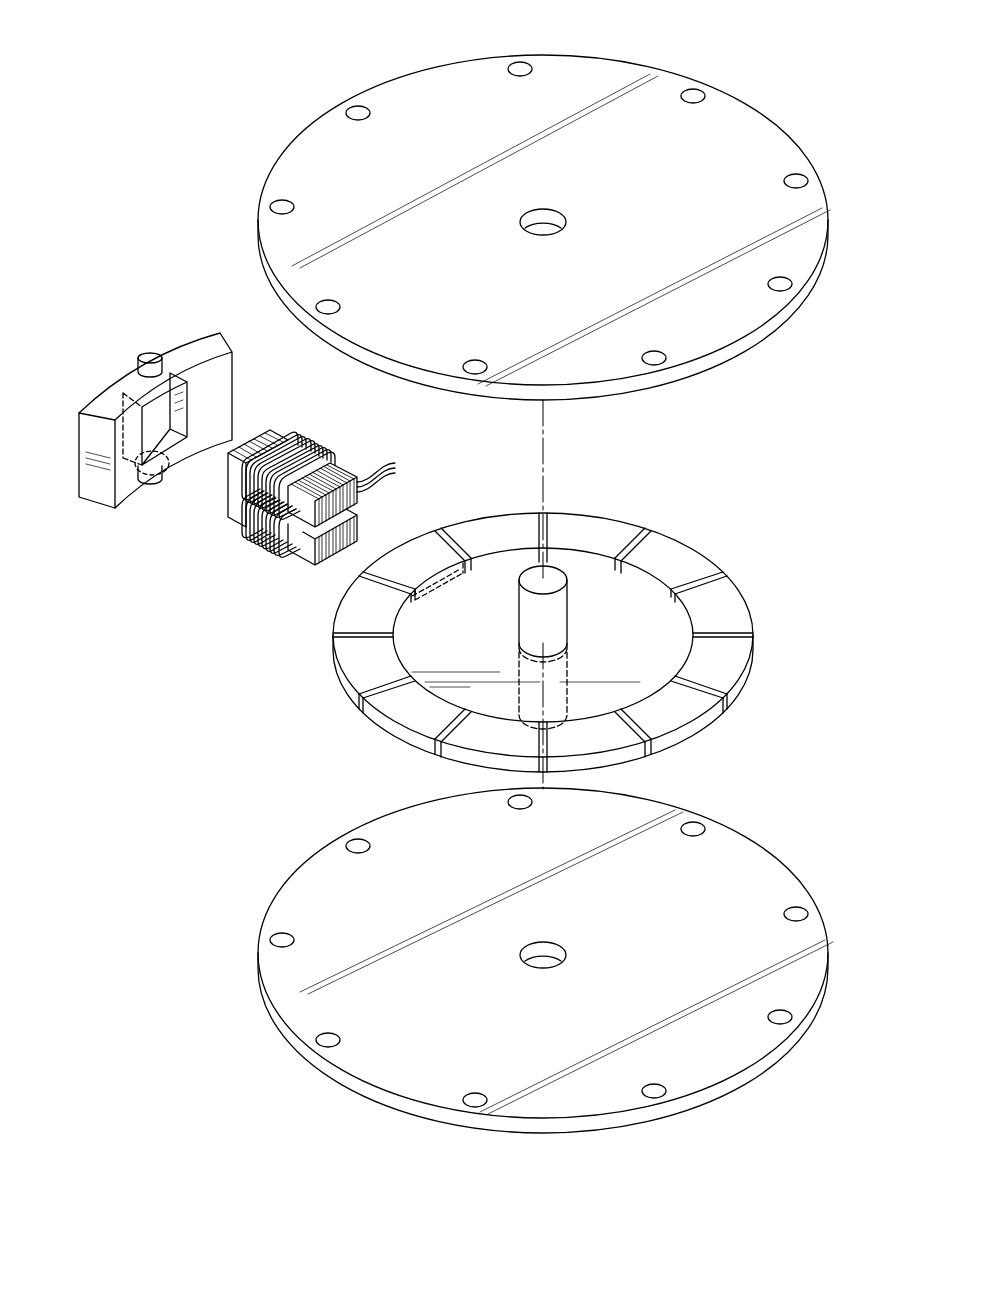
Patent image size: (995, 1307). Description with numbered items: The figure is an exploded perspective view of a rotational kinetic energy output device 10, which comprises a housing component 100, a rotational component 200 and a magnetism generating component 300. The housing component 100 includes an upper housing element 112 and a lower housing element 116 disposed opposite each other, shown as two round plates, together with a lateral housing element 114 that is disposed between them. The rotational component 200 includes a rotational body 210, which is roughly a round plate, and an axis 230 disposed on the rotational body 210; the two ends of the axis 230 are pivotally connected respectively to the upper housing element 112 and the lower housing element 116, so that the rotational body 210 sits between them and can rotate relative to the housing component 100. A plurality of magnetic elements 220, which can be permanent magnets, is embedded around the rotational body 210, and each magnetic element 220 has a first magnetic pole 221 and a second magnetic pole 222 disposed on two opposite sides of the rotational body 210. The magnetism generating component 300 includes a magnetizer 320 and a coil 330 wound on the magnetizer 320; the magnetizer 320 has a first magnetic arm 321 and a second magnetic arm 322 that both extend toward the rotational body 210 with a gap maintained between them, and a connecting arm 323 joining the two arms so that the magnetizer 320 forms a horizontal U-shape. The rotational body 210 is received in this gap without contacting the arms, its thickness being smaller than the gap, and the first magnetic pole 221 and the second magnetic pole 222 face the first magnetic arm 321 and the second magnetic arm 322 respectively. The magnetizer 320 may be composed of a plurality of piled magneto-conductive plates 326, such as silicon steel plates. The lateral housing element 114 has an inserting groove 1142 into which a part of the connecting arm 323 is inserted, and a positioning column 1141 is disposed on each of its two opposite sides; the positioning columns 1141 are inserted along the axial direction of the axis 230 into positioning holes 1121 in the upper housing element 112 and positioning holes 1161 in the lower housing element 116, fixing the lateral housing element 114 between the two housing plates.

The rotational kinetic energy output device 10 is at (113, 28).
The housing component 100 is at (92, 323).
The upper housing element 112 is at (541, 227).
The positioning hole 1121 is at (348, 110).
The lateral housing element 114 is at (129, 426).
The positioning column 1141 is at (160, 339).
The inserting groove 1142 is at (165, 470).
The lower housing element 116 is at (540, 959).
The positioning hole 1161 is at (345, 839).
The rotational component 200 is at (562, 622).
The rotational body 210 is at (580, 567).
The magnetic element 220 is at (412, 528).
The first magnetic pole 221 is at (438, 546).
The second magnetic pole 222 is at (434, 601).
The axis 230 is at (567, 615).
The magnetism generating component 300 is at (317, 498).
The magnetizer 320 is at (291, 502).
The first magnetic arm 321 is at (303, 513).
The second magnetic arm 322 is at (307, 553).
The connecting arm 323 is at (238, 503).
The magneto-conductive plate 326 is at (392, 445).
The coil 330 is at (292, 441).